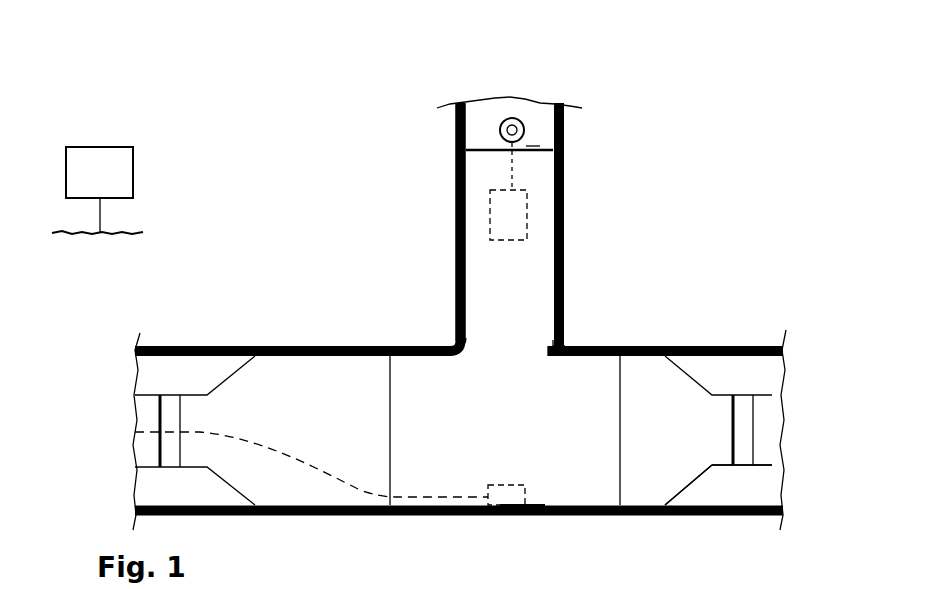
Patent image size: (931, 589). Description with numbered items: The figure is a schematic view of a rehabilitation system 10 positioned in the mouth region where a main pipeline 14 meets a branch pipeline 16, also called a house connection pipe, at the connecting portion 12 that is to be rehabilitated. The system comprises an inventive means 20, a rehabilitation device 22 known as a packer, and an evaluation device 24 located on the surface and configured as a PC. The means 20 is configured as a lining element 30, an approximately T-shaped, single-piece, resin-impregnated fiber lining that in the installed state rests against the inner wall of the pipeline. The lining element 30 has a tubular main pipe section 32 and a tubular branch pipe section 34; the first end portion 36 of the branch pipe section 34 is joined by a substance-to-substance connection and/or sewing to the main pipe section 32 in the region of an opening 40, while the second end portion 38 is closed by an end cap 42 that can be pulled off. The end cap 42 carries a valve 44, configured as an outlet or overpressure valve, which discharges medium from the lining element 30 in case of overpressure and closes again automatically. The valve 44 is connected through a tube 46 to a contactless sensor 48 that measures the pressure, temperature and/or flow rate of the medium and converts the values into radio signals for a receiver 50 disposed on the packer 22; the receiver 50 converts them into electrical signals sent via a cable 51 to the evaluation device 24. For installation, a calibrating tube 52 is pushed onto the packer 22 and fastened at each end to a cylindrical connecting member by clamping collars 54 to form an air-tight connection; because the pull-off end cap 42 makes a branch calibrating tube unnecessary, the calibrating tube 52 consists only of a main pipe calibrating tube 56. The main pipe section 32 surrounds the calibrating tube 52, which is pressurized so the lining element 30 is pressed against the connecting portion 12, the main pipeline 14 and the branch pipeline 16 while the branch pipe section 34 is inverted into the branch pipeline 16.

The rehabilitation system 10 is at (304, 107).
The connecting portion 12 is at (582, 312).
The main pipeline 14 is at (222, 343).
The branch pipeline 16 is at (562, 213).
The means for rehabilitation 20 is at (380, 387).
The rehabilitation device 22 is at (726, 496).
The evaluation device 24 is at (120, 173).
The lining element 30 is at (565, 485).
The main pipe section 32 is at (540, 487).
The branch pipe section 34 is at (472, 217).
The first end portion 36 is at (567, 337).
The second end portion 38 is at (562, 157).
The opening 40 is at (477, 357).
The end cap 42 is at (540, 146).
The valve 44 is at (530, 126).
The tube 46 is at (502, 168).
The contactless sensor 48 is at (508, 226).
The receiver 50 is at (492, 497).
The cable 51 is at (315, 490).
The calibrating tube 52 is at (670, 480).
The clamping collars 54 is at (170, 403).
The main pipe calibrating tube 56 is at (256, 492).